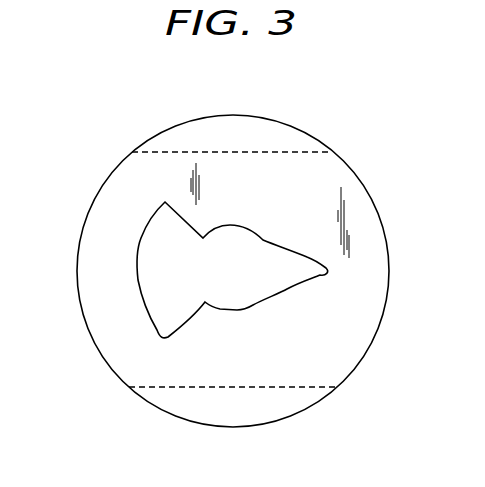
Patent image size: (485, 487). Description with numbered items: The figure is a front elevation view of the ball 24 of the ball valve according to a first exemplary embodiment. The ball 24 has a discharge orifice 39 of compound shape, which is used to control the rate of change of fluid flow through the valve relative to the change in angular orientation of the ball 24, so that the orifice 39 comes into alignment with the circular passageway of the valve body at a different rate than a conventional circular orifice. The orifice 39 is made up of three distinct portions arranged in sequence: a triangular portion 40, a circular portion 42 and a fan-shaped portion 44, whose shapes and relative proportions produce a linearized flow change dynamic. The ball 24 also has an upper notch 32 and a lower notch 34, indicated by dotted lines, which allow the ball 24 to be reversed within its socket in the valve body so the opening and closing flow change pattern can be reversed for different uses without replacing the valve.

The ball 24 is at (72, 130).
The upper notch 32 is at (286, 150).
The lower notch 34 is at (288, 386).
The discharge orifice 39 is at (304, 240).
The triangular portion 40 is at (287, 290).
The circular portion 42 is at (247, 312).
The fan-shaped portion 44 is at (183, 323).